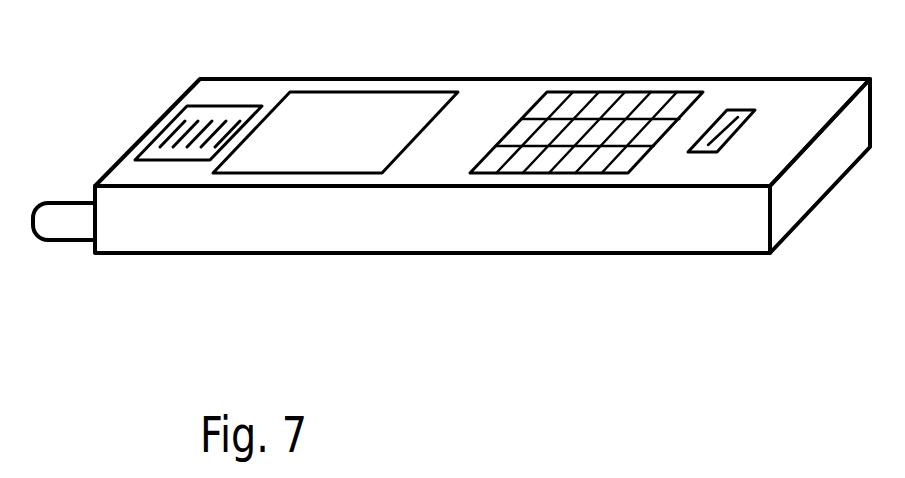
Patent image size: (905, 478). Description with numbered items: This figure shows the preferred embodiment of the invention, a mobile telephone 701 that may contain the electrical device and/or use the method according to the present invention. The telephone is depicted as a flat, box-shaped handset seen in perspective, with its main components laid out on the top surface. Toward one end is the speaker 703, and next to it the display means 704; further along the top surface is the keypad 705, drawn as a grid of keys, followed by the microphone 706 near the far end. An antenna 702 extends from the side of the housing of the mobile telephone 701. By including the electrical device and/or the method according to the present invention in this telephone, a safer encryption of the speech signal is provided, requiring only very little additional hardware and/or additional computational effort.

The mobile telephone 701 is at (370, 257).
The antenna 702 is at (70, 243).
The speaker 703 is at (172, 122).
The display means 704 is at (355, 107).
The keypad 705 is at (575, 107).
The microphone 706 is at (743, 107).